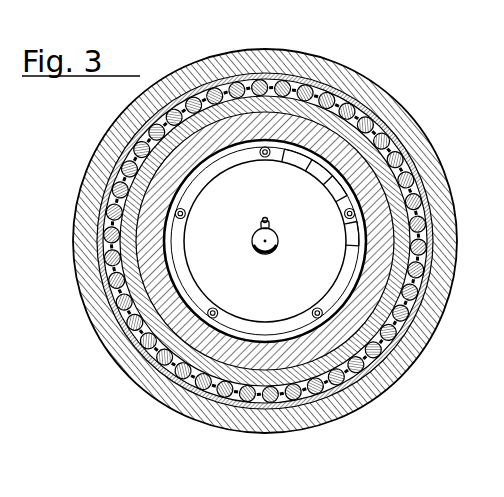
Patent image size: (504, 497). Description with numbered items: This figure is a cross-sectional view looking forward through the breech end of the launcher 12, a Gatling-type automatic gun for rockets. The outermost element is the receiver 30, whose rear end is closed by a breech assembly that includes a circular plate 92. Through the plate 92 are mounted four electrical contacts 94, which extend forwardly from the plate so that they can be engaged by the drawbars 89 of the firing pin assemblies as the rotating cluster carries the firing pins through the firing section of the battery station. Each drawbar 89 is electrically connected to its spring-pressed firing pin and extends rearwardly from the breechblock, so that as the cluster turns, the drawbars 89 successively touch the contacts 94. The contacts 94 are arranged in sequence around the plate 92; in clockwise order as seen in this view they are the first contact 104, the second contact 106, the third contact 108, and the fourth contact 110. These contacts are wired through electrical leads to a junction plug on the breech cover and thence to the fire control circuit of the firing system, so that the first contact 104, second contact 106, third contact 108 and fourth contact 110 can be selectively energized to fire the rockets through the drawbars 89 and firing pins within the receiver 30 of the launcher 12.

The launcher 12 is at (392, 49).
The receiver 30 is at (103, 141).
The drawbar 89 is at (186, 215).
The circular plate 92 is at (281, 311).
The electrical contacts 94 is at (277, 163).
The first contact 104 is at (292, 159).
The second contact 106 is at (318, 166).
The third contact 108 is at (338, 188).
The fourth contact 110 is at (345, 229).